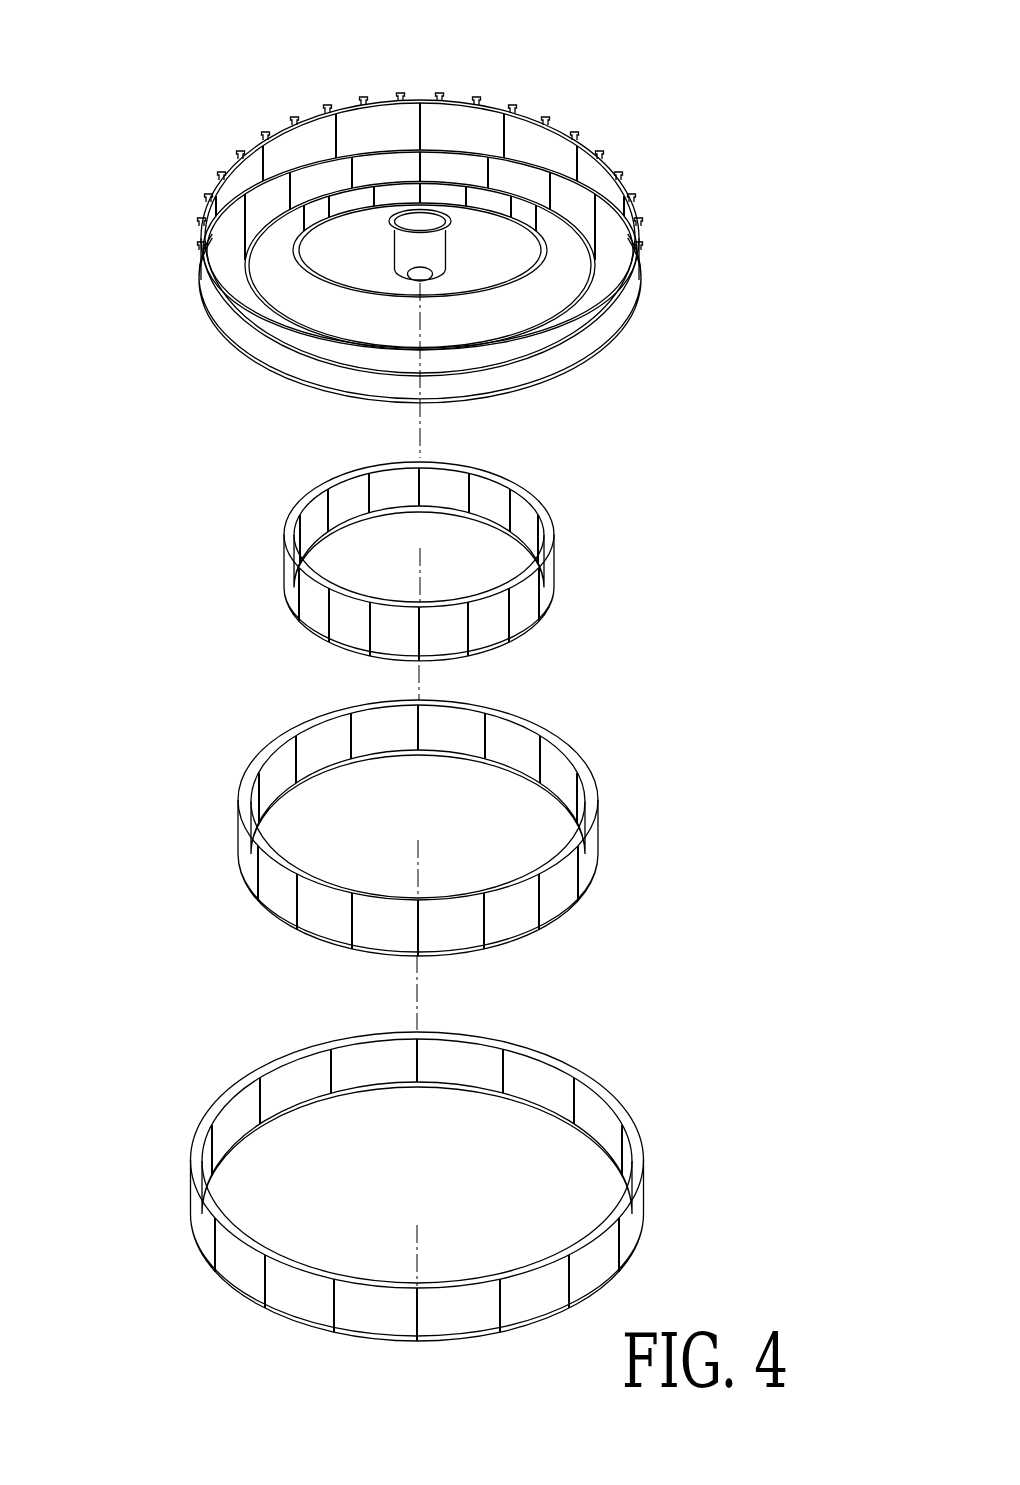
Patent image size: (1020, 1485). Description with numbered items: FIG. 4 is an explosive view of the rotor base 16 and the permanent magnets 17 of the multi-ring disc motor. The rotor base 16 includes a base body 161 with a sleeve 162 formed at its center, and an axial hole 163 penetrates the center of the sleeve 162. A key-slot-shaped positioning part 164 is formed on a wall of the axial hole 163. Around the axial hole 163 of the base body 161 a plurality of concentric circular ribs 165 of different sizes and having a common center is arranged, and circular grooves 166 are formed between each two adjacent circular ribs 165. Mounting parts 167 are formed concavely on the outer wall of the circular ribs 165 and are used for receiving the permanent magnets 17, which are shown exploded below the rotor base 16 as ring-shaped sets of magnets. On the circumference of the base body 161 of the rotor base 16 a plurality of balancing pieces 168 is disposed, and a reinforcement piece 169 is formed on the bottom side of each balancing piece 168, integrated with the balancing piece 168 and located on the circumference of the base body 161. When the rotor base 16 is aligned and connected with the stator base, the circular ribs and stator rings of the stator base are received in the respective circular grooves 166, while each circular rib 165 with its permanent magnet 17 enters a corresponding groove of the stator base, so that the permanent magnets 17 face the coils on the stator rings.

The rotor base 16 is at (458, 97).
The base body 161 is at (503, 267).
The sleeve 162 is at (407, 242).
The axial hole 163 is at (480, 260).
The key-slot-shaped positioning part 164 is at (420, 282).
The concentric circular ribs 165 is at (612, 296).
The circular grooves 166 is at (227, 290).
The mounting parts 167 is at (594, 177).
The balancing pieces 168 is at (265, 127).
The reinforcement pieces 169 is at (262, 137).
The permanent magnets 17 is at (288, 548).